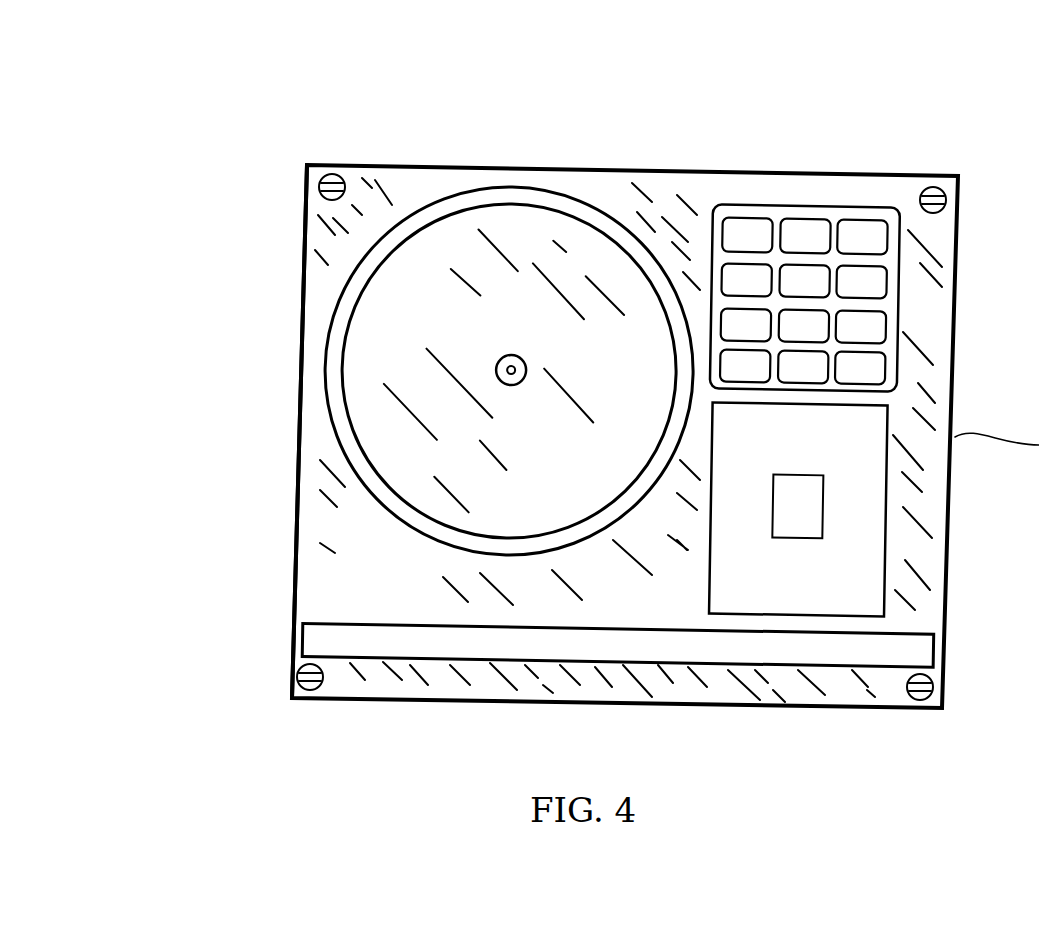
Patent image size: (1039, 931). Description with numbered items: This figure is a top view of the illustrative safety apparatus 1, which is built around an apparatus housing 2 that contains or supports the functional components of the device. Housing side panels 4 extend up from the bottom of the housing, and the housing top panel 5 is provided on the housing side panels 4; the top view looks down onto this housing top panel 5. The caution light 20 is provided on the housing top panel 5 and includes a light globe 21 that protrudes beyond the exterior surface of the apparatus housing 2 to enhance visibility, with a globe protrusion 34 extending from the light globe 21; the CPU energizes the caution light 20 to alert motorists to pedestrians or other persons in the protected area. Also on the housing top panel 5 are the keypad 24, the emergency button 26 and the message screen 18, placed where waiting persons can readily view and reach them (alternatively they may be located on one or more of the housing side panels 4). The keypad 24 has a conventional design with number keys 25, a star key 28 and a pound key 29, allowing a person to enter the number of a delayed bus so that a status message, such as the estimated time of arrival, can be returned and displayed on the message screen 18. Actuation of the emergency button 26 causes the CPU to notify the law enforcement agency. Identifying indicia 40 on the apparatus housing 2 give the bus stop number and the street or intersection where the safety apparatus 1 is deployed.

The safety apparatus 1 is at (283, 107).
The apparatus housing 2 is at (300, 260).
The housing side panels 4 is at (657, 170).
The housing top panel 5 is at (312, 510).
The message screen 18 is at (325, 638).
The caution light 20 is at (515, 182).
The light globe 21 is at (428, 253).
The keypad 24 is at (908, 296).
The number keys 25 is at (813, 226).
The emergency button 26 is at (800, 507).
The star key 28 is at (742, 378).
The pound key 29 is at (866, 378).
The globe protrusion 34 is at (496, 366).
The identifying indicia 40 is at (323, 535).